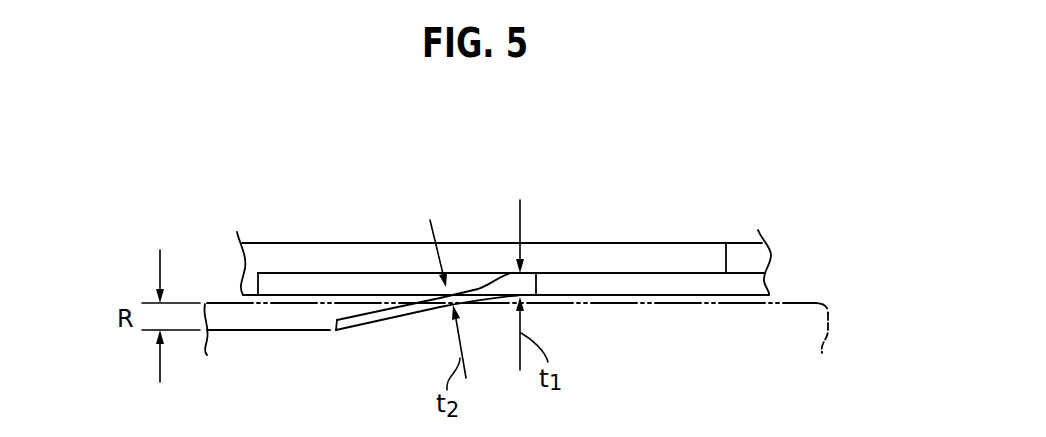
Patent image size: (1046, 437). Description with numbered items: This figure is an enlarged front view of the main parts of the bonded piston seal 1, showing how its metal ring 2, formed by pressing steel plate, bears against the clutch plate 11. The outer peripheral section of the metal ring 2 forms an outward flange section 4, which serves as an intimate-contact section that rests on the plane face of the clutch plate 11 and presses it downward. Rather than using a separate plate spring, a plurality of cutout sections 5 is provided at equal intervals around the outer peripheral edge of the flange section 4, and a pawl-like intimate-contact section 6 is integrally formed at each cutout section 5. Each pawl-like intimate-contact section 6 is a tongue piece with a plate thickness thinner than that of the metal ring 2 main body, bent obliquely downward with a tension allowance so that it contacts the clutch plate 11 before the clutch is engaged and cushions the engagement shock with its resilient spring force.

The bonded piston seal 1 is at (664, 226).
The metal ring 2 is at (585, 253).
The outward flange section 4 is at (395, 273).
The cutout sections 5 is at (338, 283).
The pawl-like intimate-contact section 6 is at (372, 322).
The clutch plate 11 is at (791, 317).